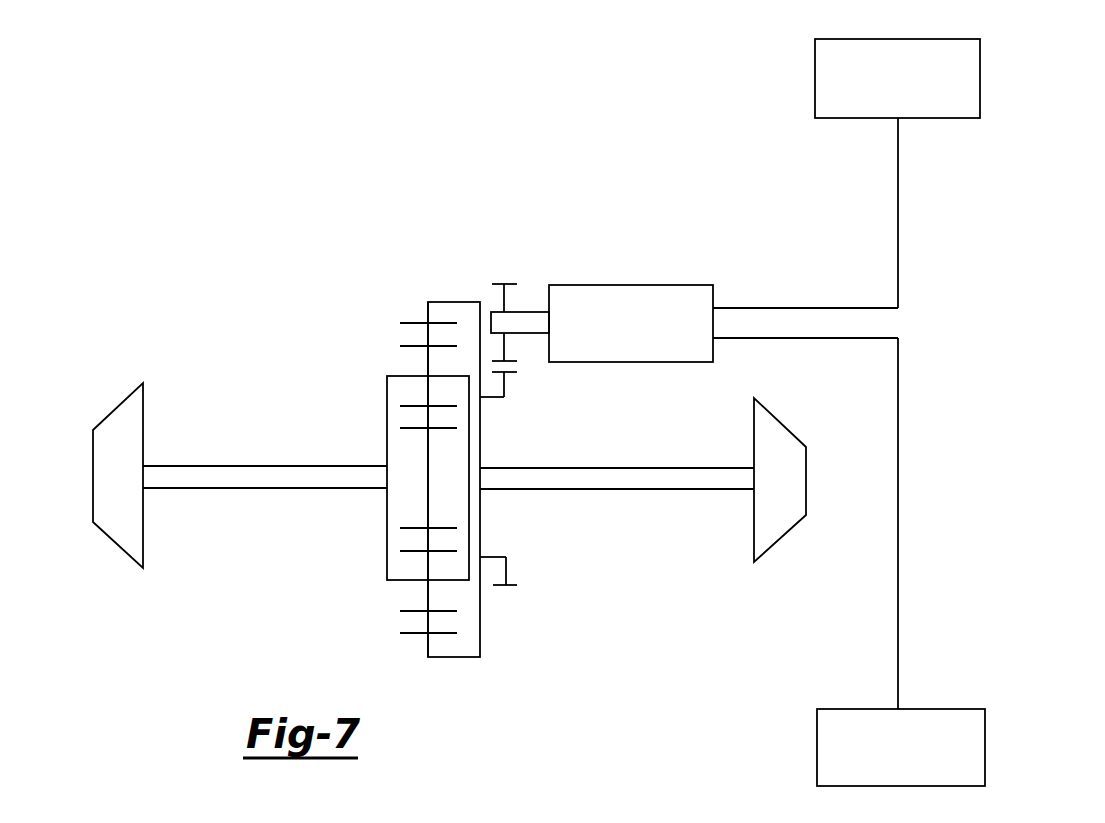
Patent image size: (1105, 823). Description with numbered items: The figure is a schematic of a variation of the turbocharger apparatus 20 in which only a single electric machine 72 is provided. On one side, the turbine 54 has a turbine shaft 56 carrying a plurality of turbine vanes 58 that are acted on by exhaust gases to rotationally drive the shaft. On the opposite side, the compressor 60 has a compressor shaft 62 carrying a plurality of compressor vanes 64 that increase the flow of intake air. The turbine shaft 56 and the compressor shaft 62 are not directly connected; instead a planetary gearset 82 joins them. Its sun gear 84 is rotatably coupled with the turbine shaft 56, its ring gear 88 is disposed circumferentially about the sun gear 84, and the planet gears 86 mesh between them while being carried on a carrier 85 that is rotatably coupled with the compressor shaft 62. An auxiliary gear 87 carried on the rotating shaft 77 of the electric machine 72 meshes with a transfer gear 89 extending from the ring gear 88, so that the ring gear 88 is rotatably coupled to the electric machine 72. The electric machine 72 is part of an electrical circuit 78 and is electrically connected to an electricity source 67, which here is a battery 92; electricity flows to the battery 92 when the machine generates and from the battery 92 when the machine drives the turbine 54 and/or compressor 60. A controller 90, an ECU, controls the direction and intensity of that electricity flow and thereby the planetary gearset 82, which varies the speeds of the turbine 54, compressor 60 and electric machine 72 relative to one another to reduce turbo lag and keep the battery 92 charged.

The turbocharger apparatus 20 is at (417, 477).
The turbine 54 is at (141, 489).
The turbine shaft 56 is at (207, 466).
The turbine vanes 58 is at (118, 408).
The compressor 60 is at (754, 501).
The compressor shaft 62 is at (675, 493).
The compressor vanes 64 is at (781, 423).
The electricity source 67 is at (968, 147).
The electric machine 72 is at (683, 265).
The rotating shaft 77 is at (533, 317).
The electrical circuit 78 is at (1015, 297).
The planetary gearset 82 is at (446, 477).
The sun gear 84 is at (427, 450).
The carrier 85 is at (387, 537).
The planet gears 86 is at (427, 355).
The auxiliary gear 87 is at (503, 295).
The ring gear 88 is at (453, 302).
The transfer gear 89 is at (508, 397).
The controller 90 is at (841, 709).
The battery 92 is at (880, 97).